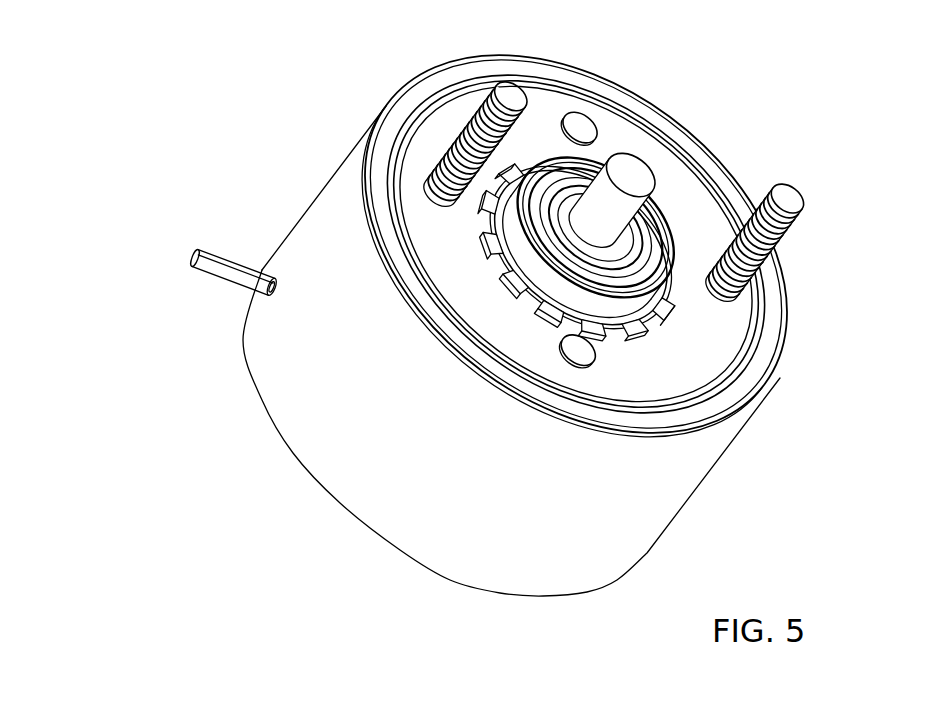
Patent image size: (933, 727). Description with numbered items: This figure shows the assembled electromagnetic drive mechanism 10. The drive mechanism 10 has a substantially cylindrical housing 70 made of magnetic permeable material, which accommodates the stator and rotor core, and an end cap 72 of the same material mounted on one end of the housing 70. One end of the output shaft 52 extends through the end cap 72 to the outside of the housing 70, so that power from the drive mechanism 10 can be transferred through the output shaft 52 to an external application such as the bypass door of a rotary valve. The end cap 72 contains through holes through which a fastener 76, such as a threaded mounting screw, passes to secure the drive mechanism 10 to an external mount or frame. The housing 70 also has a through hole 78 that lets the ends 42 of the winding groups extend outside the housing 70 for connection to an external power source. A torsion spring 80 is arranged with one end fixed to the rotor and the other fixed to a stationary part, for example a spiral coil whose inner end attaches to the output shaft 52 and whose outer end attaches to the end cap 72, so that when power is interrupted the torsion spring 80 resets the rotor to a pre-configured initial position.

The drive mechanism 10 is at (508, 298).
The ends of winding groups 42 is at (217, 251).
The output shaft 52 is at (633, 177).
The housing 70 is at (607, 515).
The end cap 72 is at (655, 362).
The fastener 76 is at (787, 197).
The through hole 78 is at (265, 297).
The torsion spring 80 is at (548, 150).